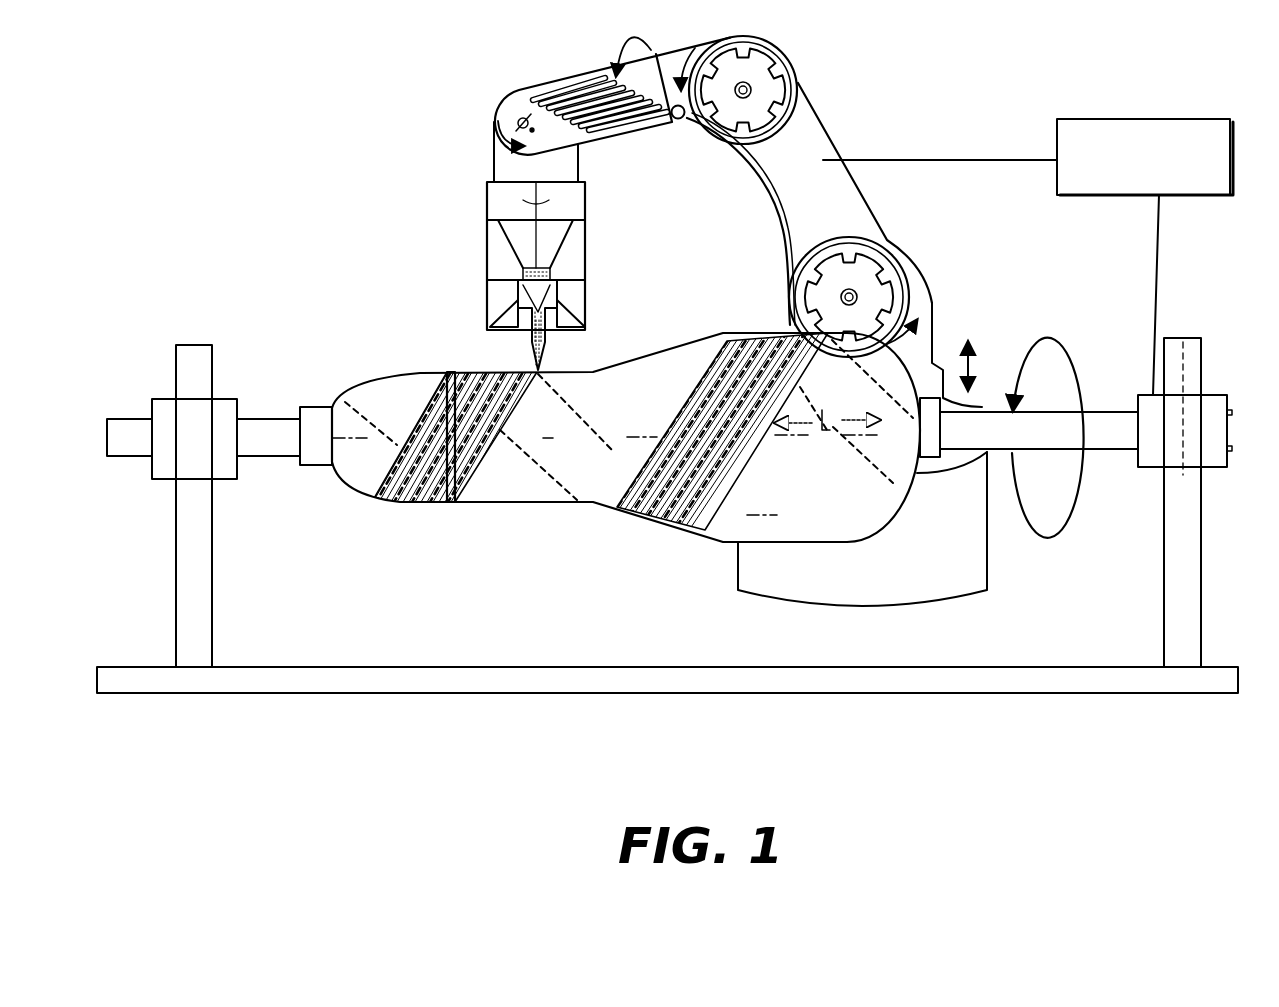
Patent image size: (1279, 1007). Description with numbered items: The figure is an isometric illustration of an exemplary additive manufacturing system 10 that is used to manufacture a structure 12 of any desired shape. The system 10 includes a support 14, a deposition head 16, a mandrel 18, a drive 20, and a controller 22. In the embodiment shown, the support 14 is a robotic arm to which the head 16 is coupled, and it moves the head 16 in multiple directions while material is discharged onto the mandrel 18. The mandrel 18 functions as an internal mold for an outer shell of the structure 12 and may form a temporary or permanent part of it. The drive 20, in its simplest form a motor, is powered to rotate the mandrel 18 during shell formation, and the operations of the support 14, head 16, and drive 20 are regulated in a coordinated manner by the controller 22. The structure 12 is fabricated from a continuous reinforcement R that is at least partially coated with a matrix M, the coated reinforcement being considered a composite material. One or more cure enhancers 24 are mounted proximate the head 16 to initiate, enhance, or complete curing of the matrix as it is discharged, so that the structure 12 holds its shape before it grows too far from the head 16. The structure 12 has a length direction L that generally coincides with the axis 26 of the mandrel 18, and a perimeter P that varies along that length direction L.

The system 10 is at (205, 718).
The structure 12 is at (393, 503).
The support 14 is at (817, 216).
The deposition head 16 is at (515, 270).
The mandrel 18 is at (638, 472).
The drive 20 is at (1115, 514).
The controller 22 is at (1154, 164).
The cure enhancer 24 is at (563, 332).
The axis 26 is at (367, 430).
The perimeter P is at (453, 502).
The continuous reinforcement R is at (540, 204).
The matrix M is at (552, 275).
The length direction L is at (827, 427).